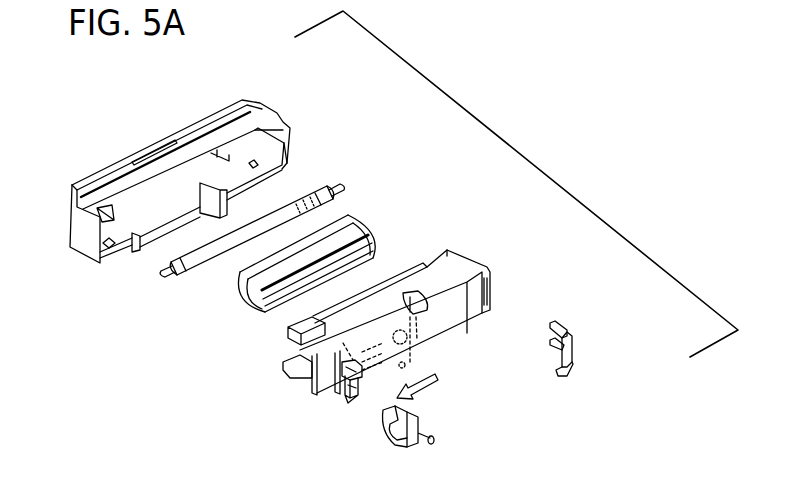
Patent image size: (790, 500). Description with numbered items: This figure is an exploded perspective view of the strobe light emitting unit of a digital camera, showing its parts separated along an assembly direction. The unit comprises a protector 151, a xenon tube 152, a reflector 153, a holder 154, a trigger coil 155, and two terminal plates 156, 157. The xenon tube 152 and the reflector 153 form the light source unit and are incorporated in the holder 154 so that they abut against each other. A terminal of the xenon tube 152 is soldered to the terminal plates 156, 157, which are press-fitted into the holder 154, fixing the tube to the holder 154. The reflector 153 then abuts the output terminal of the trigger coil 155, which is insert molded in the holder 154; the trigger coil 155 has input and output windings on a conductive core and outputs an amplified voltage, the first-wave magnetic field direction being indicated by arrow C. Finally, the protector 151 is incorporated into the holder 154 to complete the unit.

The protector 151 is at (282, 112).
The xenon tube 152 is at (332, 180).
The reflector 153 is at (367, 220).
The holder 154 is at (493, 263).
The trigger coil 155 is at (350, 398).
The terminal plate 156 is at (390, 435).
The terminal plate 157 is at (572, 338).